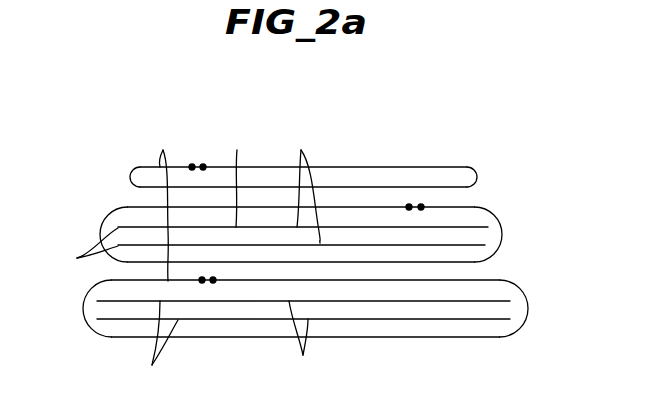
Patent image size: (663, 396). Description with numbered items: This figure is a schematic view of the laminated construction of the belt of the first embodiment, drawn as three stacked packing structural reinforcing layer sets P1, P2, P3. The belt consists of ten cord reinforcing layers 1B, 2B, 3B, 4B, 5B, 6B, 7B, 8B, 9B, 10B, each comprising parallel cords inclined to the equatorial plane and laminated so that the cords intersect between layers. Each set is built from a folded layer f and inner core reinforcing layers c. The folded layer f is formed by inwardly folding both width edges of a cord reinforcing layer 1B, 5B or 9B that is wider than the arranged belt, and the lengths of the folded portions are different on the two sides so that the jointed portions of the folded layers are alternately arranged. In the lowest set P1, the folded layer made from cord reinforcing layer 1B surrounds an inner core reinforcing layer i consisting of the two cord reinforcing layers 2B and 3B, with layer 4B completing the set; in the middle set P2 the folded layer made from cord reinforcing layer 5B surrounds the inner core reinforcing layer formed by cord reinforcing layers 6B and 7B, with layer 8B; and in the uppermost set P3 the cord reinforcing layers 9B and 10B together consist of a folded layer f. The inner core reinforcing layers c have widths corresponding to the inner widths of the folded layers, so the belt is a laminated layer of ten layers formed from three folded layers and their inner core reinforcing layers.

The packing structural reinforcing layer P1 is at (84, 312).
The packing structural reinforcing layer P2 is at (100, 230).
The packing structural reinforcing layer P3 is at (131, 175).
The cord reinforcing layer 1B is at (400, 337).
The cord reinforcing layer 2B is at (443, 319).
The cord reinforcing layer 3B is at (467, 301).
The cord reinforcing layer 4B is at (450, 281).
The cord reinforcing layer 5B is at (467, 260).
The cord reinforcing layer 6B is at (470, 242).
The cord reinforcing layer 7B is at (457, 222).
The cord reinforcing layer 8B is at (363, 207).
The cord reinforcing layer 9B is at (350, 187).
The cord reinforcing layer 10B is at (340, 167).
The folded layer f is at (199, 205).
The inner core reinforcing layer i is at (304, 253).
The inner core reinforcing layer c is at (119, 306).